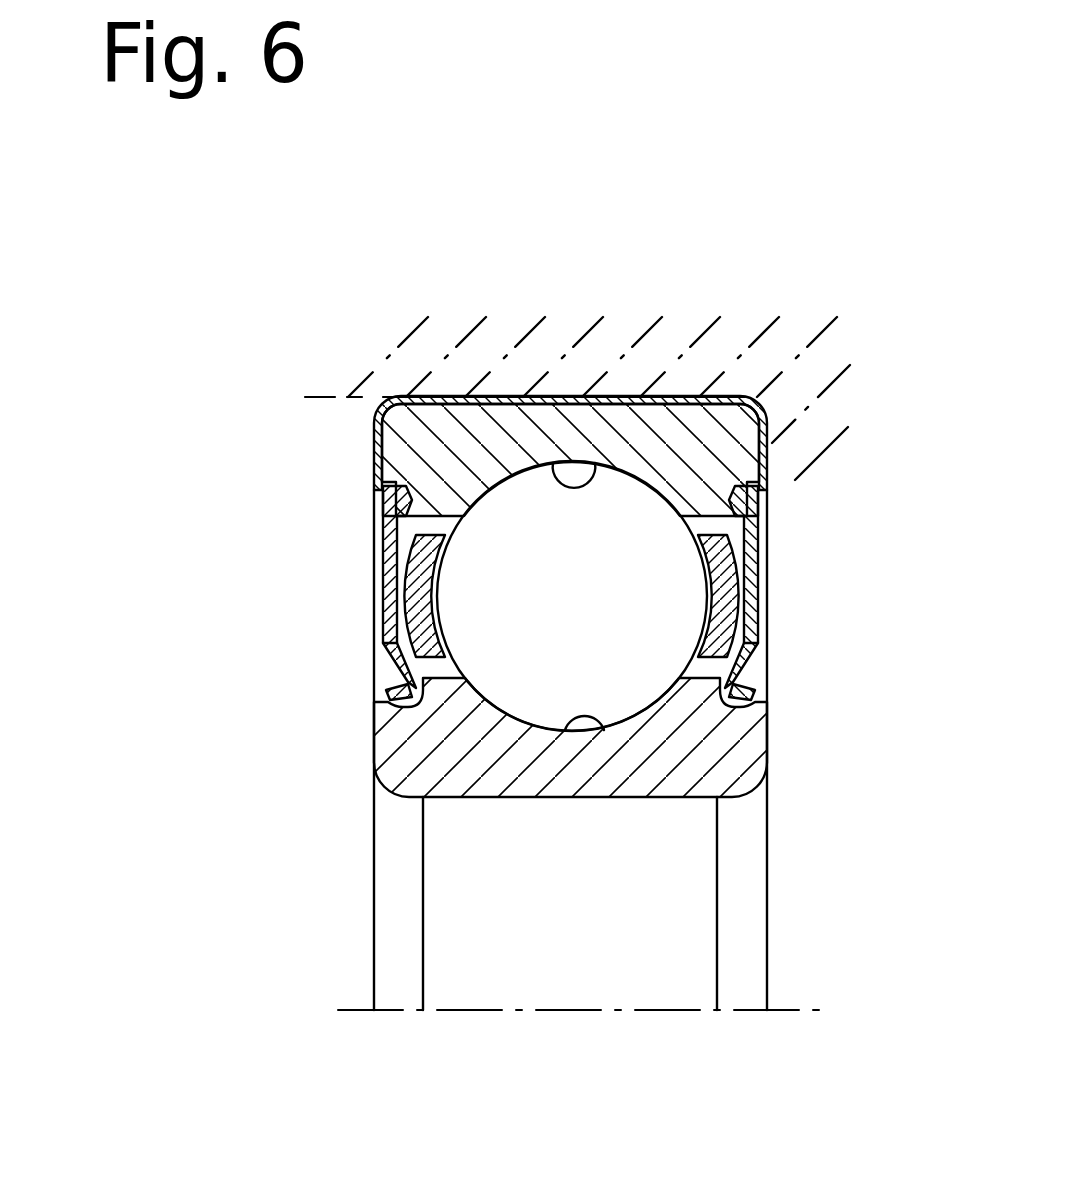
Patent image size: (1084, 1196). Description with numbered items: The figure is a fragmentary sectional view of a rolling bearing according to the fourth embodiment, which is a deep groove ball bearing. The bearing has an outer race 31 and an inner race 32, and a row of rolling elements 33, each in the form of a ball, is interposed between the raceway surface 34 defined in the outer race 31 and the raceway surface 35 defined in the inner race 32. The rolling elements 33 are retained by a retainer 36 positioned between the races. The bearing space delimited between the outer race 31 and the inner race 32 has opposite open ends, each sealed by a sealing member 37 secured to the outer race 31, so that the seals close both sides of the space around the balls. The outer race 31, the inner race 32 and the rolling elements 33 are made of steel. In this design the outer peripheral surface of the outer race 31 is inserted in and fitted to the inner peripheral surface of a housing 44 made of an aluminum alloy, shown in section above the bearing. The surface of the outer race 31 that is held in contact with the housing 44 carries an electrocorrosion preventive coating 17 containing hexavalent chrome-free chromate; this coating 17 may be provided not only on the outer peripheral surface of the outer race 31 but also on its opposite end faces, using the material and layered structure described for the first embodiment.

The electrocorrosion preventive coating 17 is at (693, 397).
The outer race 31 is at (402, 457).
The inner race 32 is at (408, 748).
The rolling elements 33 is at (472, 572).
The raceway surface 34 is at (590, 470).
The raceway surface 35 is at (602, 730).
The retainer 36 is at (422, 617).
The sealing members 37 is at (377, 635).
The housing 44 is at (529, 348).